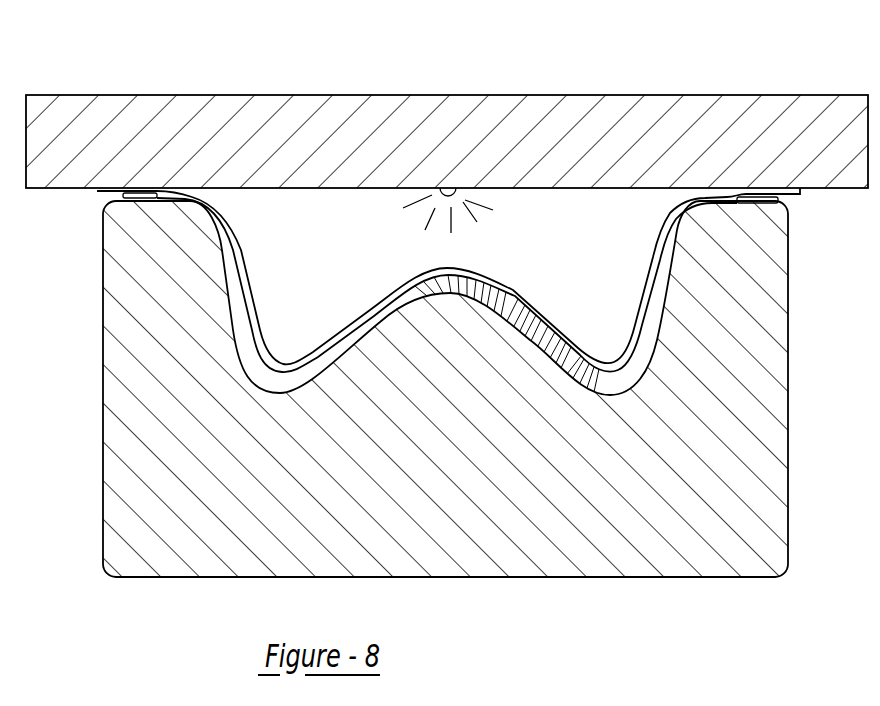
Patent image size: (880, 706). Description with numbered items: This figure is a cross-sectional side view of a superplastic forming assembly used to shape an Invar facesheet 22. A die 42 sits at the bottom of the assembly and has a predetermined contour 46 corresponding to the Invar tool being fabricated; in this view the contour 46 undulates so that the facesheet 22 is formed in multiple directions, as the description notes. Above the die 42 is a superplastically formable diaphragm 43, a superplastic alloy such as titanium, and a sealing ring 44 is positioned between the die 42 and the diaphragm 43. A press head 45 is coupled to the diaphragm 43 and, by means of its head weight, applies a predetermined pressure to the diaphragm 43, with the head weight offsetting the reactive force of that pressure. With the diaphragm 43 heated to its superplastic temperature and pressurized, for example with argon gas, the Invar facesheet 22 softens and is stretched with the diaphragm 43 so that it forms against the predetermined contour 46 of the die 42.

The press head 45 is at (340, 130).
The die 42 is at (780, 353).
The superplastically formable diaphragm 43 is at (97, 189).
The sealing ring 44 is at (800, 195).
The Invar facesheet 22 is at (303, 378).
The predetermined contour 46 is at (530, 335).